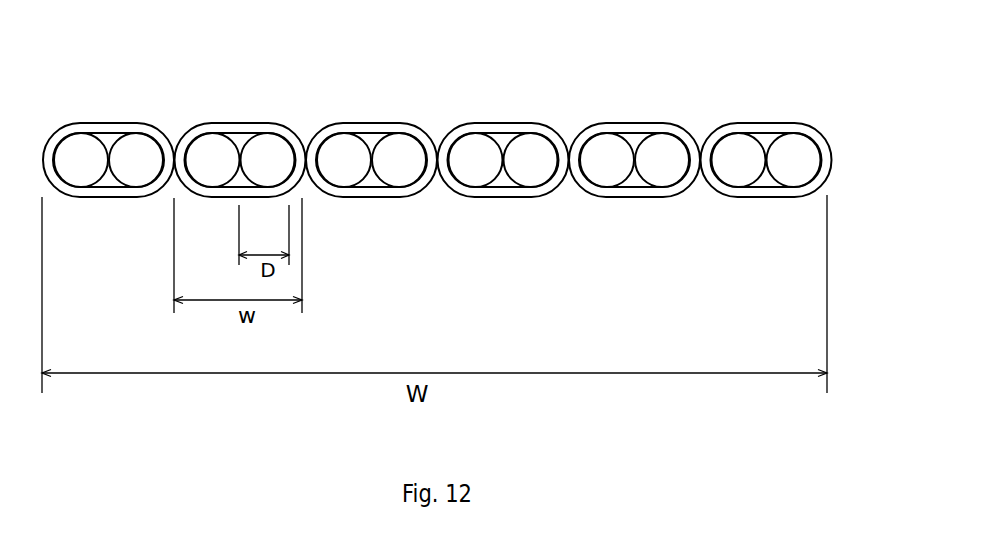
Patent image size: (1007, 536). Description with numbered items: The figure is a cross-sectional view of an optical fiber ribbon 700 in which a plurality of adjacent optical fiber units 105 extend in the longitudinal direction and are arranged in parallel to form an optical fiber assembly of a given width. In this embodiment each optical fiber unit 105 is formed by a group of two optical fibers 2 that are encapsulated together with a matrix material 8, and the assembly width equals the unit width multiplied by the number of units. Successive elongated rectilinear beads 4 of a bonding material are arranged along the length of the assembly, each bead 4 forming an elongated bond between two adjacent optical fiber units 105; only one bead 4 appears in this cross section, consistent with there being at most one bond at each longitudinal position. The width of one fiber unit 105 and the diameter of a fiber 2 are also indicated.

The optical fiber ribbon 700 is at (780, 58).
The optical fiber unit 105 is at (136, 82).
The bead 4 is at (307, 128).
The matrix material 8 is at (105, 190).
The optical fiber 2 is at (80, 146).